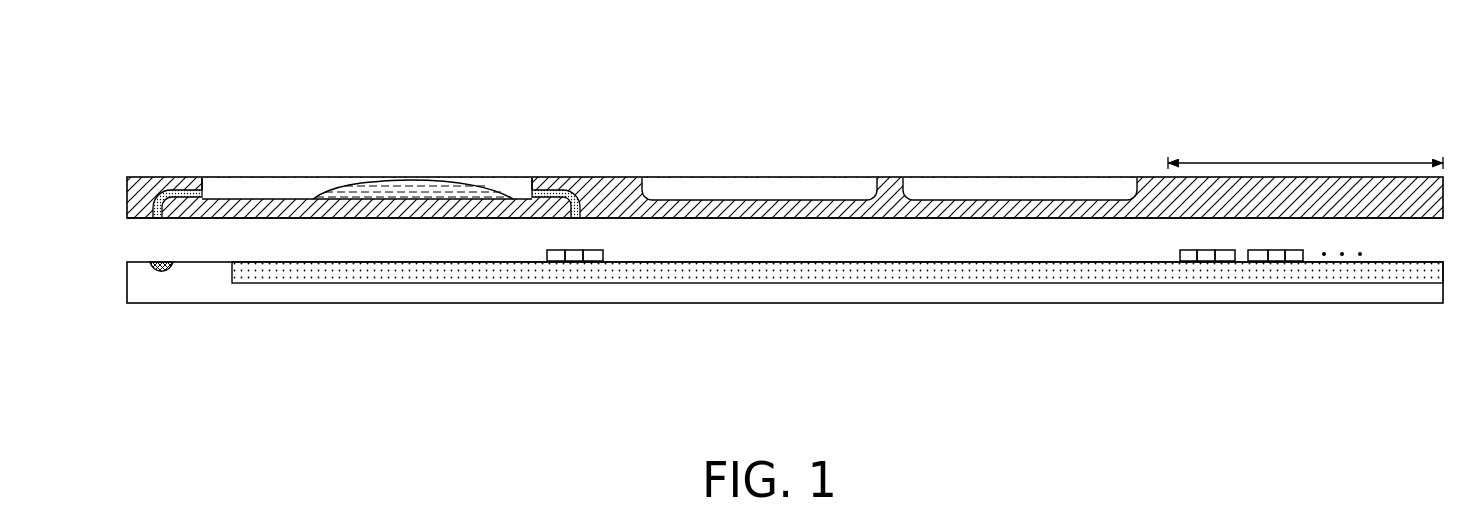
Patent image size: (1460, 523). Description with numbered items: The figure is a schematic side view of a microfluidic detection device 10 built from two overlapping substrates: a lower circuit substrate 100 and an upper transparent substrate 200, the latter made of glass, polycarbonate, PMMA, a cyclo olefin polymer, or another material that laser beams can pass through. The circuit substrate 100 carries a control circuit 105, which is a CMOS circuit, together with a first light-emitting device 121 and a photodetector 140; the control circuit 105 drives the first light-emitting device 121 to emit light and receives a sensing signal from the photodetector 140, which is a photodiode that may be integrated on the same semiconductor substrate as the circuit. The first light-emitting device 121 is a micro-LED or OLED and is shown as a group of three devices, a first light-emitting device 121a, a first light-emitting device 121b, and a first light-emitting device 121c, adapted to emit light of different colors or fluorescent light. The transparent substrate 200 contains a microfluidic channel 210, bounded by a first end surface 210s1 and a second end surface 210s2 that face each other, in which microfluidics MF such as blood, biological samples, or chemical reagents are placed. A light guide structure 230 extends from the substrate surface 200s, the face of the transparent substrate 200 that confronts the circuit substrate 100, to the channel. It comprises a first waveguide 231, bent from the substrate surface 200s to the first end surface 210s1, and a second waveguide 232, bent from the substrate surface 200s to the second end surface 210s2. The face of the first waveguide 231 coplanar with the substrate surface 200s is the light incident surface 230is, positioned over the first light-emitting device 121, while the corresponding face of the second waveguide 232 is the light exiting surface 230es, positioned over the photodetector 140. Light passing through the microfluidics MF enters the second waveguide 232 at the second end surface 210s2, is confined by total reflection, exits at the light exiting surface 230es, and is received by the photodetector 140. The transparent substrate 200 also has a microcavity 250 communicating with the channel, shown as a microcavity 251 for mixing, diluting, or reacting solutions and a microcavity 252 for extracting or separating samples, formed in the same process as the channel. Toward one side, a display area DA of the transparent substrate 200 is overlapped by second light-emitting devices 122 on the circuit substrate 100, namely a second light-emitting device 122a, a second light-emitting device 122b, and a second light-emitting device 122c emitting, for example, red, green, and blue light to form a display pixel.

The microfluidic detection device 10 is at (1452, 433).
The circuit substrate 100 is at (188, 292).
The control circuit 105 is at (303, 273).
The photodetector 140 is at (157, 262).
The first light-emitting device 121 is at (583, 330).
The first light-emitting device 121a is at (557, 262).
The first light-emitting device 121b is at (575, 262).
The first light-emitting device 121c is at (633, 307).
The second light-emitting devices 122 is at (1236, 329).
The second light-emitting device 122a is at (1188, 262).
The second light-emitting device 122b is at (1206, 262).
The second light-emitting device 122c is at (1267, 307).
The transparent substrate 200 is at (143, 177).
The substrate surface 200s is at (338, 221).
The microfluidic channel 210 is at (298, 190).
The first end surface 210s1 is at (530, 190).
The second end surface 210s2 is at (205, 191).
The light guide structure 230 is at (374, 146).
The first waveguide 231 is at (576, 186).
The second waveguide 232 is at (183, 186).
The light incident surface 230is is at (576, 221).
The light exiting surface 230es is at (158, 221).
The microcavity 250 is at (889, 151).
The microcavity 251 is at (754, 195).
The microcavity 252 is at (1024, 195).
The microfluidics MF is at (413, 190).
The display area DA is at (1305, 150).